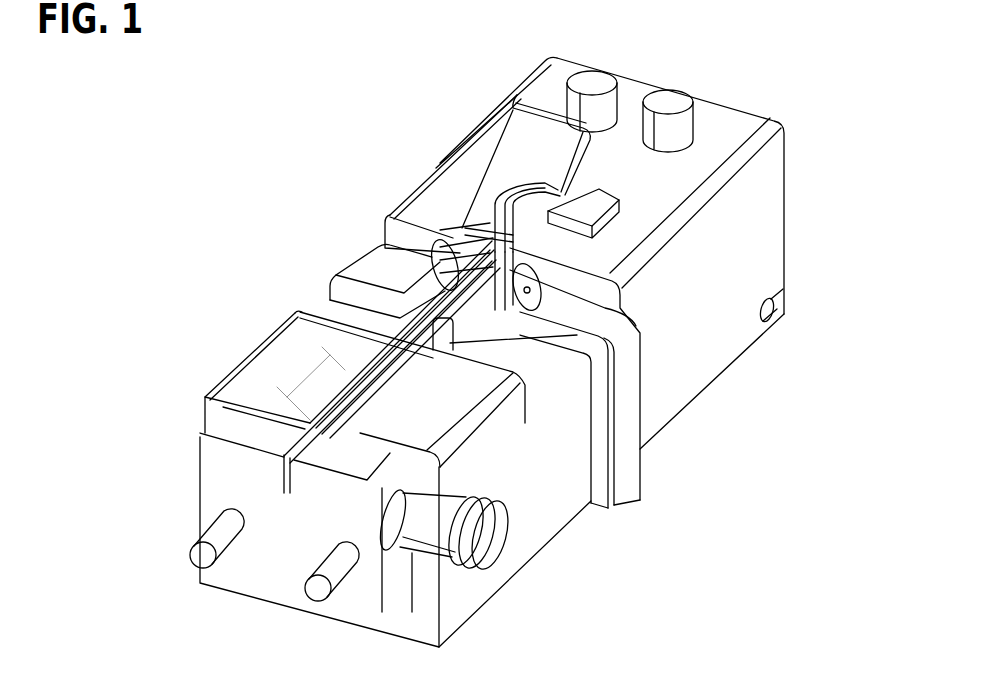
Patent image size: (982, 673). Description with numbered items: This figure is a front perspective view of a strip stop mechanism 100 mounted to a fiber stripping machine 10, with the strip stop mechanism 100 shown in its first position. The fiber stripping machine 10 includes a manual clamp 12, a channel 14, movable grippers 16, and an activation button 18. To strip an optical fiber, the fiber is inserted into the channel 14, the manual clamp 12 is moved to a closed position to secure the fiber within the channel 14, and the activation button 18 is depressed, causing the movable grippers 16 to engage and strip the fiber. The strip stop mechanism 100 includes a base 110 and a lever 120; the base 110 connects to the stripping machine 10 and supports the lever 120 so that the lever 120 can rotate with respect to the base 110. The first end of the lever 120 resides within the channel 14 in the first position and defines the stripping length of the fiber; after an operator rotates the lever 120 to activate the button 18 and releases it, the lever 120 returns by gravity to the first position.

The fiber stripping machine 10 is at (283, 347).
The manual clamp 12 is at (210, 478).
The channel 14 is at (308, 425).
The movable grippers 16 is at (358, 392).
The activation button 18 is at (600, 212).
The strip stop mechanism 100 is at (510, 135).
The base 110 is at (601, 492).
The lever 120 is at (488, 215).